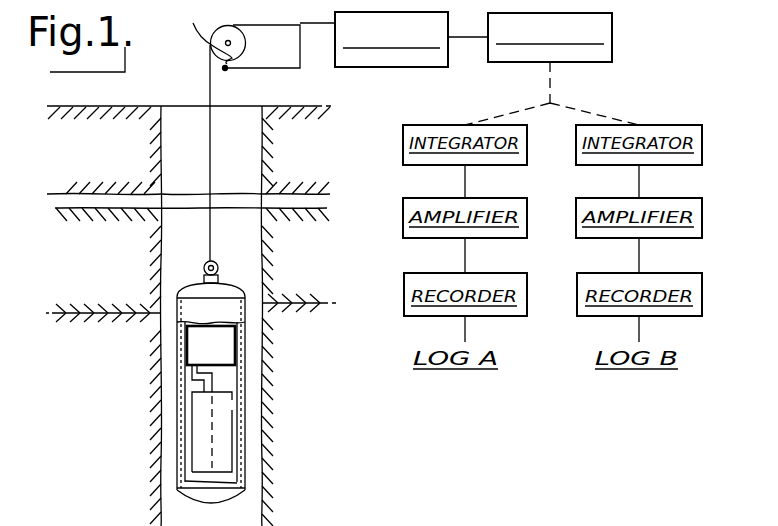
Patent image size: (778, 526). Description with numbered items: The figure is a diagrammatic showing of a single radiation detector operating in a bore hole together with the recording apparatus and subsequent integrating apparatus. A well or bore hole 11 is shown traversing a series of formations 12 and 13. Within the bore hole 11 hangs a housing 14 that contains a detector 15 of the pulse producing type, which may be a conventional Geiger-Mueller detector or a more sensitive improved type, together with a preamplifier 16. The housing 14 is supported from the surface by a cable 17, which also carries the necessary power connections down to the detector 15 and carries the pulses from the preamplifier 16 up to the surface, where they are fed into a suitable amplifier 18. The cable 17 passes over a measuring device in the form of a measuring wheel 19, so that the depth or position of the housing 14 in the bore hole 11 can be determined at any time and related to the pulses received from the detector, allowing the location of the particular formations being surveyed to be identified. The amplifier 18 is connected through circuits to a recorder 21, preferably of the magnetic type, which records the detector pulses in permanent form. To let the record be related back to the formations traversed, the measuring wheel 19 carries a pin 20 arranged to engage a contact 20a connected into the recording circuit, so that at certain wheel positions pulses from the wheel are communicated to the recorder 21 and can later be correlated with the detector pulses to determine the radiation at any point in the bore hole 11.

The bore hole 11 is at (193, 162).
The formation 12 is at (307, 162).
The formation 13 is at (314, 266).
The housing 14 is at (178, 383).
The detector 15 is at (197, 446).
The preamplifier 16 is at (228, 352).
The cable 17 is at (209, 76).
The amplifier 18 is at (380, 60).
The measuring wheel 19 is at (246, 52).
The pin 20 is at (206, 33).
The contact 20a is at (228, 69).
The recorder 21 is at (604, 56).